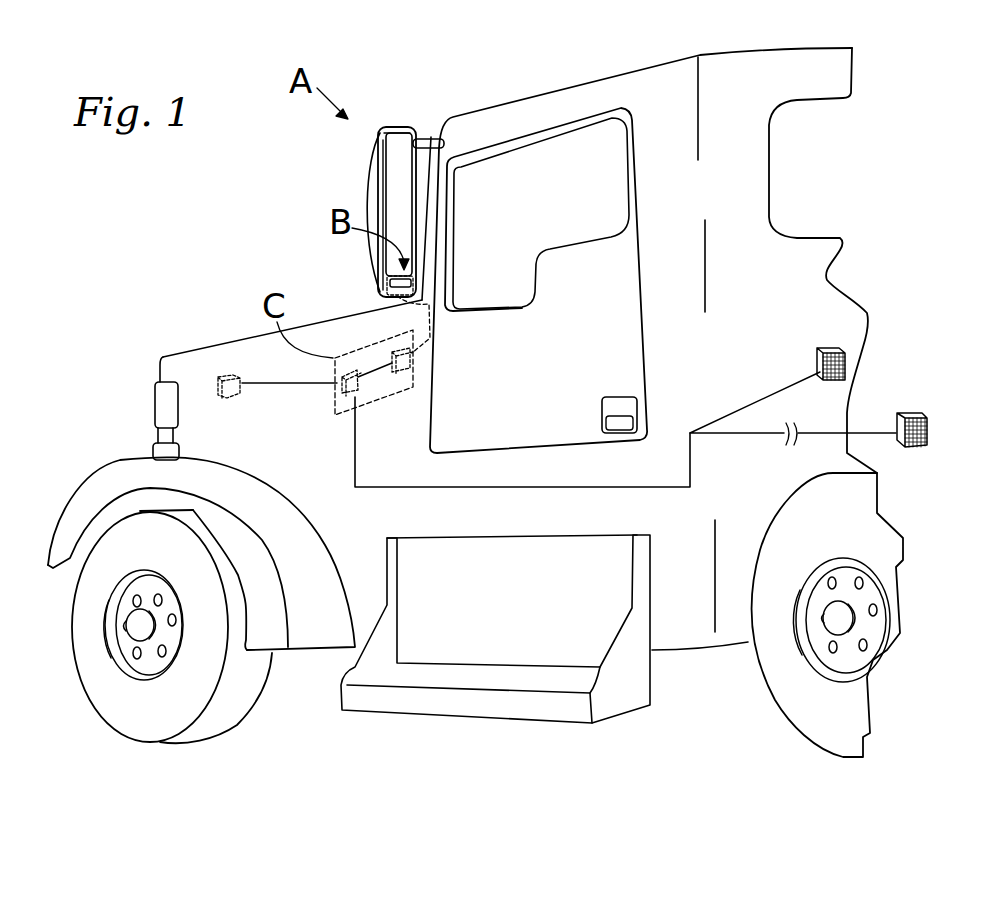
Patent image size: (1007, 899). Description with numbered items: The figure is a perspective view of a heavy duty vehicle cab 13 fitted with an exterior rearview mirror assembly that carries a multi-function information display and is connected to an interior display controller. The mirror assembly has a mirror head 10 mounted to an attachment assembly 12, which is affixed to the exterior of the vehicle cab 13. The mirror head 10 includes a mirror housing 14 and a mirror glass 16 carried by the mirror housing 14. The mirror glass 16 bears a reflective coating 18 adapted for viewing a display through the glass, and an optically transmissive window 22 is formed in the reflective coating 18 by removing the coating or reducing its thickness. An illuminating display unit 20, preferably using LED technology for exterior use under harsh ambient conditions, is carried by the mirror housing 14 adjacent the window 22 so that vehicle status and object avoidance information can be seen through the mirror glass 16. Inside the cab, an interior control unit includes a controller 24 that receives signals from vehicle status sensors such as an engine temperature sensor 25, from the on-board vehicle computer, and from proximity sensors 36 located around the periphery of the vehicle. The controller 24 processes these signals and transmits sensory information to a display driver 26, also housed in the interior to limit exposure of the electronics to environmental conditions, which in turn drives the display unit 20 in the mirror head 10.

The mirror head 10 is at (409, 113).
The attachment assembly 12 is at (431, 136).
The vehicle cab 13 is at (677, 84).
The mirror housing 14 is at (370, 175).
The mirror glass 16 is at (397, 152).
The reflective coating 18 is at (400, 221).
The illuminating display unit 20 is at (386, 290).
The optically transmissive window 22 is at (387, 280).
The controller 24 is at (347, 388).
The engine temperature sensor 25 is at (222, 378).
The display driver 26 is at (403, 368).
The proximity sensors 36 is at (908, 413).